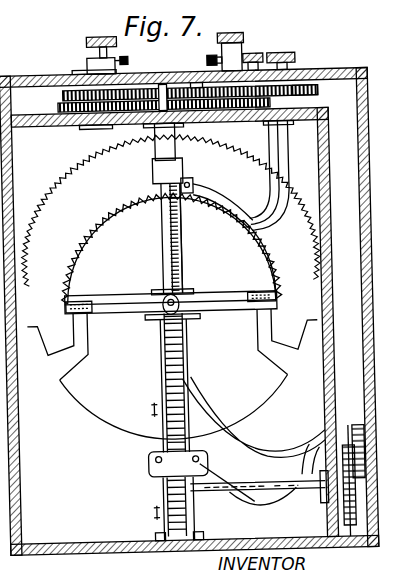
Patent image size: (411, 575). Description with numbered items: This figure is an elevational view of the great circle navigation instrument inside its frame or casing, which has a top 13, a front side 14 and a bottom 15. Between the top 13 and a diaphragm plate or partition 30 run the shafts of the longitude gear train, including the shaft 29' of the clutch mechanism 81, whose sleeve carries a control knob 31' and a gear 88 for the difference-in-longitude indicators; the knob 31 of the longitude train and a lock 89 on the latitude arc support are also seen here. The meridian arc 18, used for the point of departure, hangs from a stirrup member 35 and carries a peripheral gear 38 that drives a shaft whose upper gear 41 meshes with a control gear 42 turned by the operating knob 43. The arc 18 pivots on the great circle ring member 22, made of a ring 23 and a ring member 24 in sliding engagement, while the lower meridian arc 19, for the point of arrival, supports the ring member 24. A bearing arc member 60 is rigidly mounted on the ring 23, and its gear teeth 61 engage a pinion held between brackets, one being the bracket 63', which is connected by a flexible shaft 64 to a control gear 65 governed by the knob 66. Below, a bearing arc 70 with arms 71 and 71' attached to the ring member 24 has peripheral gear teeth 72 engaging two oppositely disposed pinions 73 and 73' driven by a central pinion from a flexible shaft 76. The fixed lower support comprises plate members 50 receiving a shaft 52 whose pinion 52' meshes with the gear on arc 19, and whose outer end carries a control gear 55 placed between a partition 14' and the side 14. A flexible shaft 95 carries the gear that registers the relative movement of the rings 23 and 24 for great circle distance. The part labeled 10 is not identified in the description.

The top 13 is at (32, 71).
The bottom 15 is at (98, 548).
The front side 14 is at (339, 322).
The partition 14' is at (353, 307).
The diaphragm plate or partition 30 is at (42, 123).
The control gear 42 is at (66, 94).
The shaft 29' is at (164, 123).
The control gear 65 is at (324, 93).
The gear 41 is at (170, 90).
The gear 88 is at (202, 82).
The operating knob or button 43 is at (107, 35).
The lock 89 is at (82, 60).
The clutch mechanism 81 is at (214, 58).
The control knob 31' is at (243, 41).
The knob or control button 31 is at (255, 52).
The control button or knob 66 is at (290, 56).
The stirrup member 35 is at (156, 176).
The bracket 63' is at (199, 175).
The flexible shaft 64 is at (216, 199).
The bearing arc member 60 is at (87, 240).
The gear teeth 61 is at (262, 252).
The peripheral gear 38 is at (164, 234).
The meridian arc 18 is at (184, 256).
The great circle ring member 22 is at (141, 291).
The ring 23 is at (224, 292).
The ring member 24 is at (116, 315).
The arm 71 is at (69, 347).
The arm 71' is at (276, 342).
The bearing arc 70 is at (80, 403).
The peripheral gear teeth 72 is at (66, 409).
The meridian arc 19 is at (164, 374).
The flexible shaft 95 is at (201, 412).
The gauge marks 10 is at (151, 409).
The pinion 73 is at (162, 463).
The pinion 73' is at (226, 475).
The pinion 52' is at (157, 507).
The plate members 50 is at (159, 523).
The shaft 52 is at (259, 483).
The flexible shaft 76 is at (282, 502).
The control gear 55 is at (345, 530).